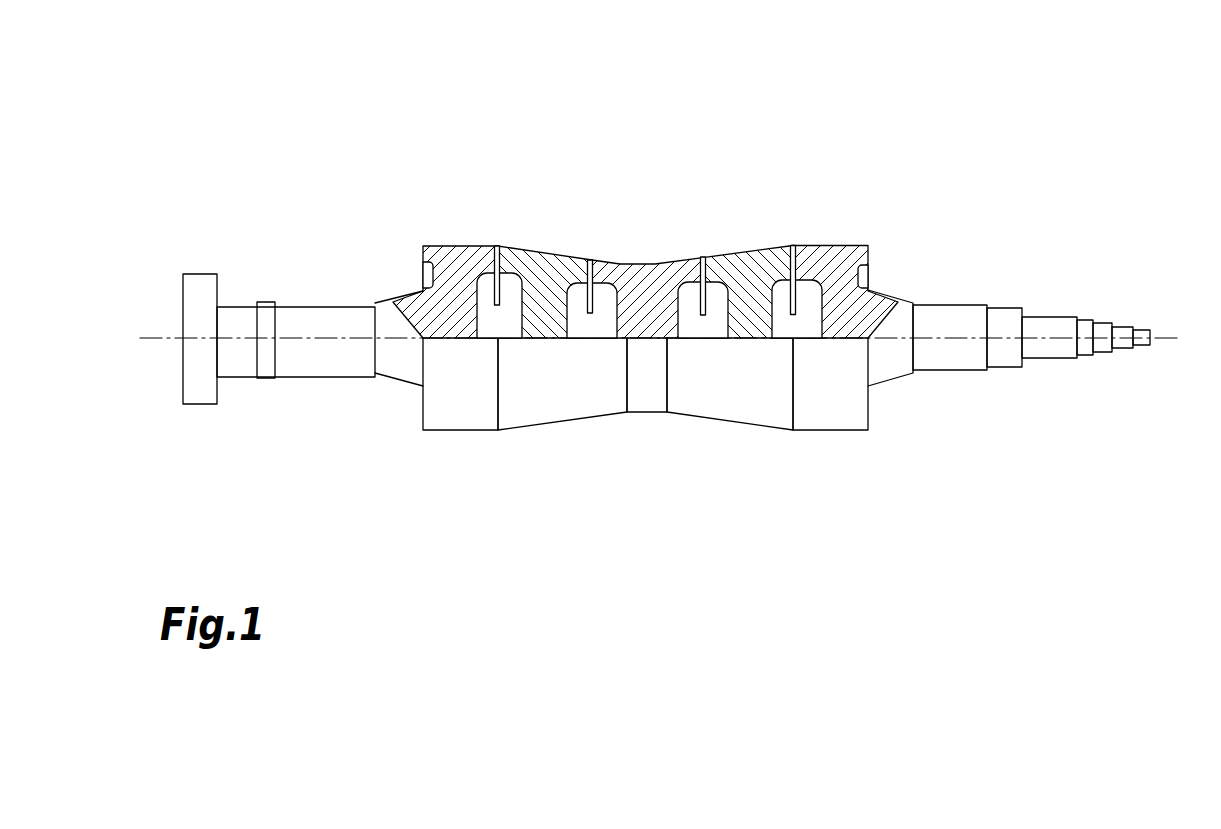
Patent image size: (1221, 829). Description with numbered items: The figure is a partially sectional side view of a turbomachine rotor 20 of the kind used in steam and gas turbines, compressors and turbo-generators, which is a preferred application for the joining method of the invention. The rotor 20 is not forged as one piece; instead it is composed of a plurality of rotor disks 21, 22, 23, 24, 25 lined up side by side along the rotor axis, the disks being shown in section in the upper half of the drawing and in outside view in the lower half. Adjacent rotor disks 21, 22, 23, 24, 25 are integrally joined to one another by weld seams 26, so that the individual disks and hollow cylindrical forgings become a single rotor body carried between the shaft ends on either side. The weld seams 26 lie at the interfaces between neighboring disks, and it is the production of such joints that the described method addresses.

The rotor 20 is at (292, 162).
The rotor disk 21 is at (465, 246).
The rotor disk 22 is at (558, 255).
The rotor disk 23 is at (655, 264).
The rotor disk 24 is at (755, 251).
The rotor disk 25 is at (838, 245).
The weld seam 26 is at (500, 246).